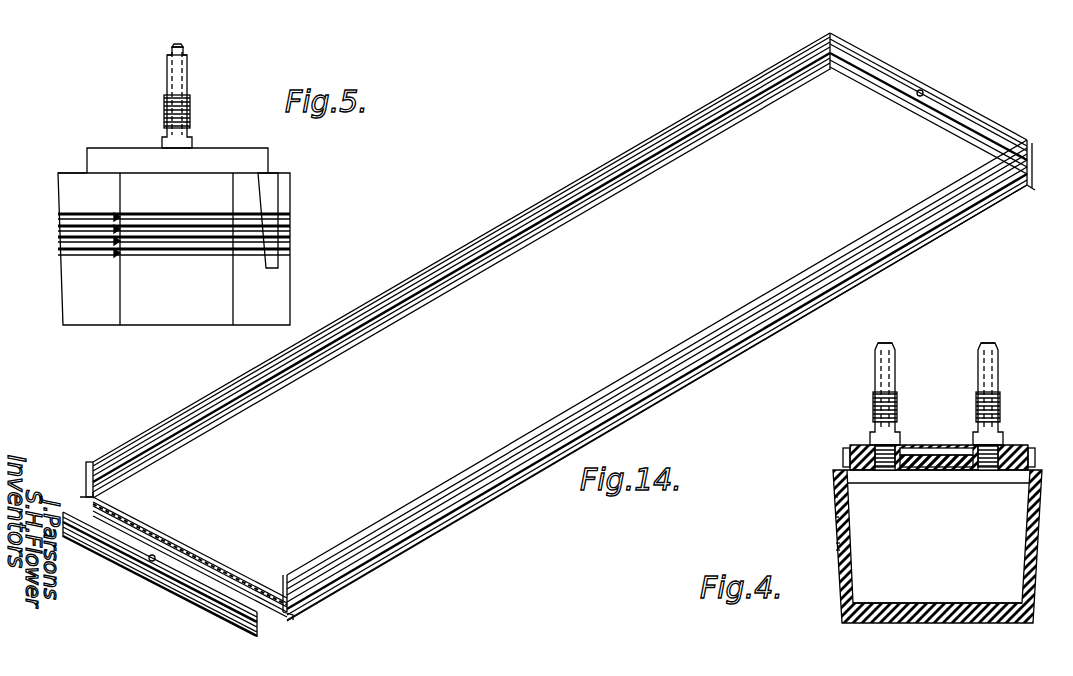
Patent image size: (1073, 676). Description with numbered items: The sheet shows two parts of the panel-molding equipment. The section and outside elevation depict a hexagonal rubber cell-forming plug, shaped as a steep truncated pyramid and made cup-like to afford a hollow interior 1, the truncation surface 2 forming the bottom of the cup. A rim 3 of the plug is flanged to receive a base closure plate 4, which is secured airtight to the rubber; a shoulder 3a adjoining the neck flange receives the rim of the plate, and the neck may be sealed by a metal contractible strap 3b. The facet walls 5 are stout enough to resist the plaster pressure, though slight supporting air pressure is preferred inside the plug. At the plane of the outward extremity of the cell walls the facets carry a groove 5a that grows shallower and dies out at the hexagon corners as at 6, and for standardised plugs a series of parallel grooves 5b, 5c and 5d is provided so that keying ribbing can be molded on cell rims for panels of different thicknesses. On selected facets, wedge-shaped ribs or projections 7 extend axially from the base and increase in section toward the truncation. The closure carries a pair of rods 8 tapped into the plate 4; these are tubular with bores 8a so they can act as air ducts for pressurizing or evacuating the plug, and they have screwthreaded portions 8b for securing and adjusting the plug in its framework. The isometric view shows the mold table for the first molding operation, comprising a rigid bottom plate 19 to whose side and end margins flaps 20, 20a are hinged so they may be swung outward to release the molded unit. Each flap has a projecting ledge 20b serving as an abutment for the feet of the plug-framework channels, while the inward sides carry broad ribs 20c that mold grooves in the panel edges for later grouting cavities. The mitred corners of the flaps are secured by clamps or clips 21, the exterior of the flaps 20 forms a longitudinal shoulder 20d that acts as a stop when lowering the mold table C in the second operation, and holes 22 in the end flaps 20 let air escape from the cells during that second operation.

In FIG. 4, the hollow interior 1 is at (932, 559).
In FIG. 4, the truncation surface 2 is at (998, 605).
In FIG. 5, the rim (neck flange) 3 is at (226, 167).
In FIG. 4, the rim (neck flange) 3 is at (1027, 445).
In FIG. 5, the shoulder 3a is at (74, 172).
In FIG. 4, the shoulder 3a is at (843, 465).
In FIG. 4, the metal contractible strap 3b is at (1017, 474).
In FIG. 4, the base closure plate 4 is at (920, 455).
In FIG. 5, the facet walls 5 is at (160, 315).
In FIG. 5, the groove 5a is at (292, 251).
In FIG. 4, the groove 5a is at (848, 545).
In FIG. 5, the groove 5b is at (292, 238).
In FIG. 4, the groove 5b is at (836, 540).
In FIG. 5, the groove 5c is at (292, 227).
In FIG. 4, the groove 5c is at (834, 525).
In FIG. 5, the groove 5d is at (292, 215).
In FIG. 4, the groove 5d is at (835, 510).
In FIG. 5, the corner groove run-out 6 is at (113, 213).
In FIG. 5, the ribs or projections 7 is at (256, 199).
In FIG. 5, the rods 8 is at (167, 84).
In FIG. 4, the rods 8 is at (978, 376).
In FIG. 5, the bores 8a is at (189, 76).
In FIG. 4, the bores 8a is at (982, 352).
In FIG. 5, the screwthreaded portions 8b is at (165, 110).
In FIG. 4, the screwthreaded portions 8b is at (1018, 388).
In FIG. 14, the bottom plate 19 is at (671, 271).
In FIG. 14, the flaps 20 is at (869, 54).
In FIG. 14, the flaps 20a is at (163, 541).
In FIG. 14, the projecting ledge 20b is at (843, 298).
In FIG. 14, the broad ribs 20c is at (145, 440).
In FIG. 14, the longitudinal shoulder 20d is at (367, 553).
In FIG. 14, the clamps or clips 21 is at (1027, 140).
In FIG. 14, the holes 22 is at (924, 92).
In FIG. 14, the mold table C is at (541, 193).